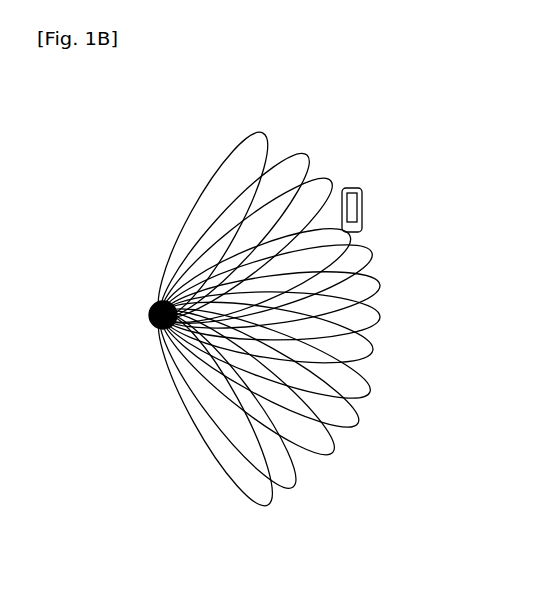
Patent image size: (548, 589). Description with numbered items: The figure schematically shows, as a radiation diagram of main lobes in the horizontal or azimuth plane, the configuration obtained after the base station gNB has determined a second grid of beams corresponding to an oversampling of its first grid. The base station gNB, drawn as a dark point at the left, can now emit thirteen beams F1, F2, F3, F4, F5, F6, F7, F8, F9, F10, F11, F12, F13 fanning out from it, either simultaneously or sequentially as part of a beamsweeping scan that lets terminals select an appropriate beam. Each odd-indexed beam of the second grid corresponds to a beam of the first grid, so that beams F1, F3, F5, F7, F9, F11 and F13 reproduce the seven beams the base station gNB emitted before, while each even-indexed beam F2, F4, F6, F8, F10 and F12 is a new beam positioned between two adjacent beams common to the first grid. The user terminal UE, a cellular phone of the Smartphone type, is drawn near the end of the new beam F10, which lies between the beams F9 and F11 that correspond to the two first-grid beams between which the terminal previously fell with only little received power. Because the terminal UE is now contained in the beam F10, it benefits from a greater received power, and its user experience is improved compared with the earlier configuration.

The base station gNB is at (150, 316).
The user terminal UE is at (362, 205).
The beam F1 is at (269, 507).
The beam F2 is at (294, 489).
The beam F3 is at (334, 454).
The beam F4 is at (359, 425).
The beam F5 is at (371, 394).
The beam F6 is at (374, 352).
The beam F7 is at (381, 319).
The beam F8 is at (381, 287).
The beam F9 is at (373, 255).
The beam F10 is at (345, 244).
The beam F11 is at (333, 179).
The beam F12 is at (309, 153).
The beam F13 is at (265, 131).